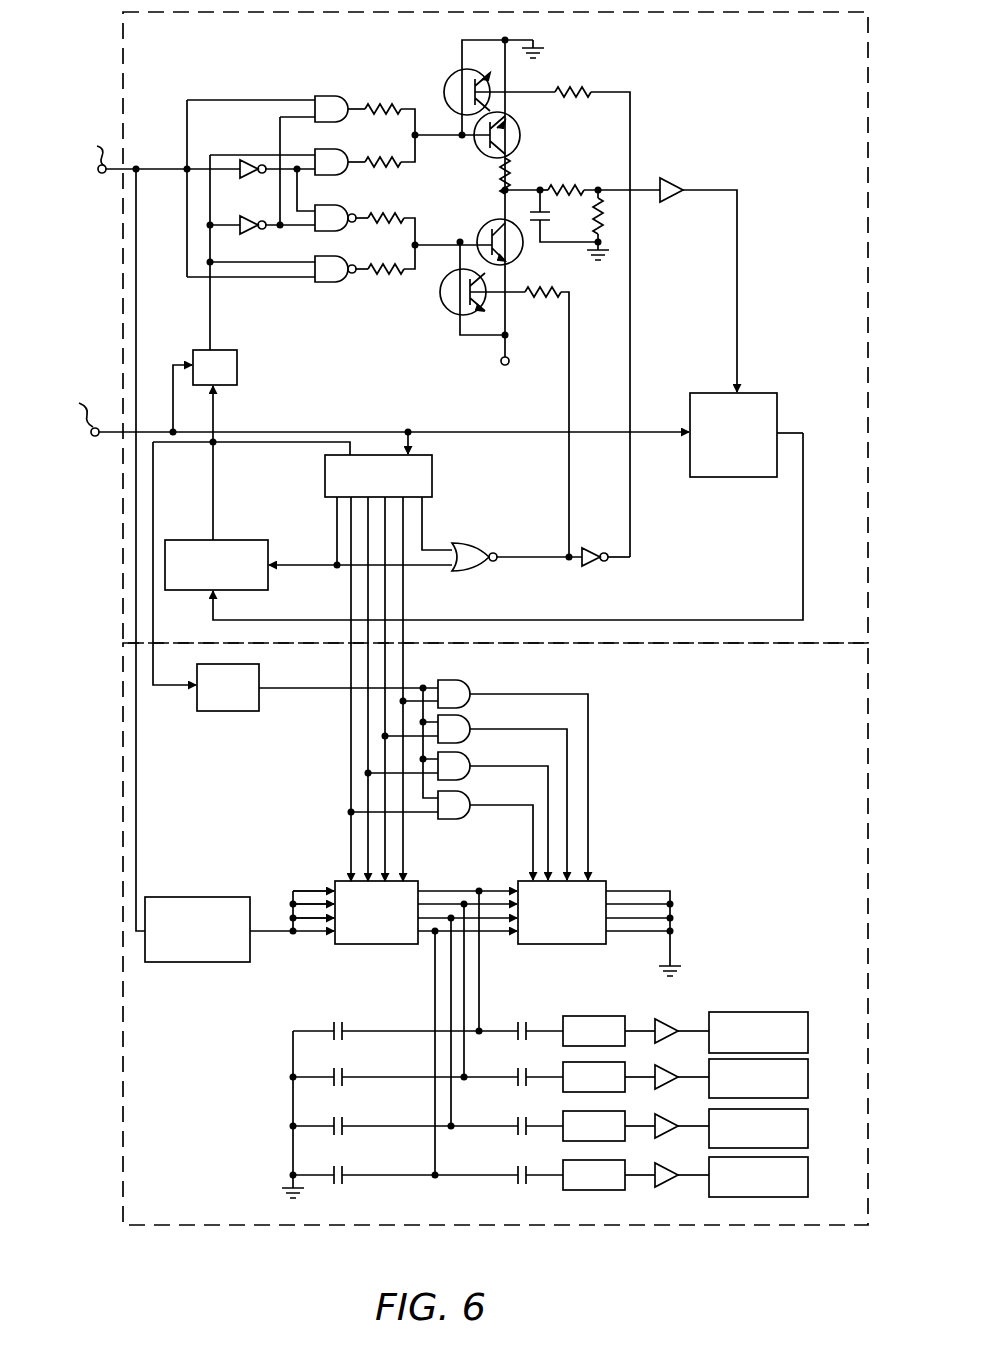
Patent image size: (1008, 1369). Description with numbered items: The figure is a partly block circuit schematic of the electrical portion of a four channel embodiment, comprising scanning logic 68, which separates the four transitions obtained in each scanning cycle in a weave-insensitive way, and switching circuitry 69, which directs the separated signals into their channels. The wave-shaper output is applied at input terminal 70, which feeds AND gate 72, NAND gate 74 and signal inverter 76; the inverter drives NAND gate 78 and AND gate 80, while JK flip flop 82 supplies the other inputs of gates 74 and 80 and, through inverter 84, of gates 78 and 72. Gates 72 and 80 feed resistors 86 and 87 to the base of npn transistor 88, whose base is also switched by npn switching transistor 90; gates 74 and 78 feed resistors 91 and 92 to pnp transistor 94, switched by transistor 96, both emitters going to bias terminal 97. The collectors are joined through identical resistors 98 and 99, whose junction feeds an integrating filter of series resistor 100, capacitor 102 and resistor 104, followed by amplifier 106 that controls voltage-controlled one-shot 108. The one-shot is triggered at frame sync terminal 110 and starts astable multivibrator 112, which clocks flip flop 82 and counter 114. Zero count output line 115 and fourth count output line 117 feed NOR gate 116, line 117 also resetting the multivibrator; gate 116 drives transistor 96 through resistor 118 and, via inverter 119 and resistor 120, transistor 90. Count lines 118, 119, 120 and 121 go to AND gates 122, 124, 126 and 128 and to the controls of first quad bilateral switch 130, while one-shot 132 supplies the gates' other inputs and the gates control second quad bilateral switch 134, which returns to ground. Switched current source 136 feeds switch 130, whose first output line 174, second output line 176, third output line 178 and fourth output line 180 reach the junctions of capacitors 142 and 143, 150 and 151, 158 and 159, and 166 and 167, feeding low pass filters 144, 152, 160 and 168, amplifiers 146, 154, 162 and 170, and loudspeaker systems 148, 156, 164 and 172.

The scanning logic 68 is at (870, 322).
The switching circuitry 69 is at (868, 822).
The input terminal 70 is at (102, 175).
The AND gate 72 is at (320, 96).
The NAND gate 74 is at (335, 282).
The signal inverter 76 is at (245, 180).
The NAND gate 78 is at (335, 231).
The AND gate 80 is at (328, 149).
The JK flip flop 82 is at (238, 368).
The inverter 84 is at (245, 236).
The resistor 86 is at (372, 104).
The resistor 87 is at (400, 170).
The npn transistor 88 is at (520, 140).
The npn switching transistor 90 is at (446, 72).
The resistor 91 is at (385, 278).
The resistor 92 is at (389, 192).
The pnp transistor 94 is at (476, 230).
The switching transistor 96 is at (447, 310).
The terminal 97 is at (509, 365).
The resistor 98 is at (510, 165).
The resistor 99 is at (500, 185).
The series resistor 100 is at (562, 182).
The capacitor 102 is at (532, 244).
The resistor 104 is at (605, 225).
The amplifier 106 is at (680, 180).
The voltage-controlled one-shot 108 is at (752, 393).
The terminal 110 is at (93, 438).
The astable multivibrator 112 is at (226, 540).
The counter 114 is at (432, 480).
The zero count output line 115 is at (483, 520).
The NOR gate 116 is at (507, 538).
The fourth count output line 117 is at (335, 516).
The resistor / first count output line 118 is at (535, 302).
The inverter / second count output line 119 is at (404, 604).
The resistor / third count output line 120 is at (575, 88).
The fourth count output line 121 is at (349, 588).
The AND gate 122 is at (460, 680).
The AND gate 124 is at (466, 717).
The AND gate 126 is at (466, 754).
The AND gate 128 is at (466, 793).
The first quad bilateral switch 130 is at (335, 882).
The one-shot 132 is at (259, 672).
The second quad bilateral switch 134 is at (600, 881).
The switched current source 136 is at (240, 962).
The capacitor 142 is at (343, 1024).
The capacitor 143 is at (527, 1023).
The low band pass filter 144 is at (596, 1016).
The amplifier 146 is at (660, 1018).
The loudspeaker system 148 is at (755, 1012).
The capacitor 150 is at (343, 1070).
The capacitor 151 is at (516, 1070).
The low pass filter 152 is at (566, 1048).
The amplifier 154 is at (666, 1050).
The loudspeaker system 156 is at (808, 1078).
The capacitor 158 is at (343, 1119).
The capacitor 159 is at (516, 1119).
The low pass filter 160 is at (566, 1097).
The amplifier 162 is at (666, 1099).
The loudspeaker system 164 is at (808, 1135).
The capacitor 166 is at (343, 1168).
The capacitor 167 is at (516, 1168).
The low pass filter 168 is at (566, 1146).
The amplifier 170 is at (660, 1162).
The loudspeaker system 172 is at (808, 1170).
The first output line 174 is at (440, 889).
The second output line 176 is at (492, 902).
The third output line 178 is at (490, 920).
The fourth output line 180 is at (500, 933).